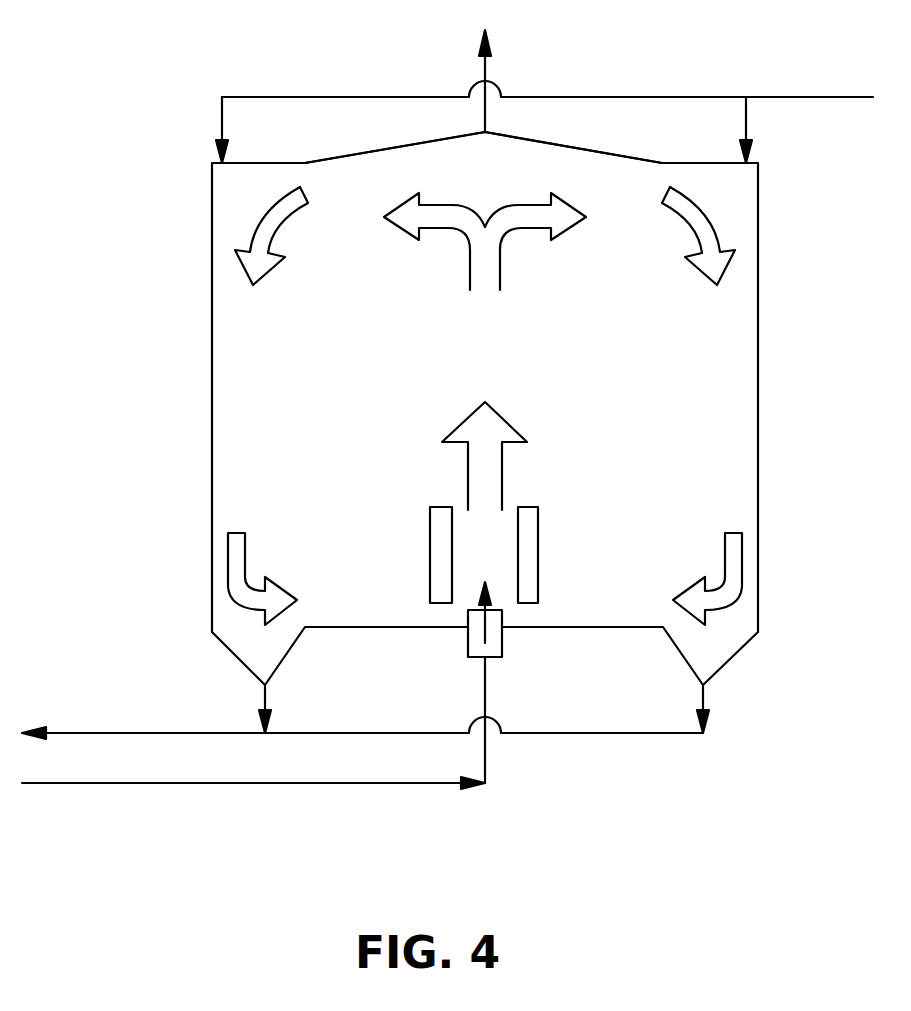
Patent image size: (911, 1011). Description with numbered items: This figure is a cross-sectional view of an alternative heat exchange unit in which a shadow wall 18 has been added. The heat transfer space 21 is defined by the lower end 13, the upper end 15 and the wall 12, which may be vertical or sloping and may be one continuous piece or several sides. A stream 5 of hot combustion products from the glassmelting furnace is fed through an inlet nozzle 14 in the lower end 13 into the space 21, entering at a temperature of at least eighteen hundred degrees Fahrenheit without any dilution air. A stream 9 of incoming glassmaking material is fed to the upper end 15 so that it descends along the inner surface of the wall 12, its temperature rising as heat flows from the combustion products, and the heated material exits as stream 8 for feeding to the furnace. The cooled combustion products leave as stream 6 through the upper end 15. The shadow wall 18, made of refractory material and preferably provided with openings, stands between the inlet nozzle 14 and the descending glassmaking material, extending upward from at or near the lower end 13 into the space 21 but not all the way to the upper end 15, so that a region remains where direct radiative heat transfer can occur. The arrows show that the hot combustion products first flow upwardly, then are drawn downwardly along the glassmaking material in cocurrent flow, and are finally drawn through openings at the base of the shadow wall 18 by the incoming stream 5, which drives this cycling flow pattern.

The stream of hot combustion products 5 is at (358, 783).
The stream of cooled combustion products 6 is at (485, 60).
The stream of heated glassmaking material 8 is at (142, 733).
The stream of incoming glassmaking material 9 is at (248, 95).
The wall 12 is at (212, 300).
The lower end 13 is at (347, 627).
The inlet nozzle 14 is at (502, 642).
The upper end 15 is at (402, 150).
The shadow wall 18 is at (538, 562).
The heat transfer space 21 is at (500, 375).